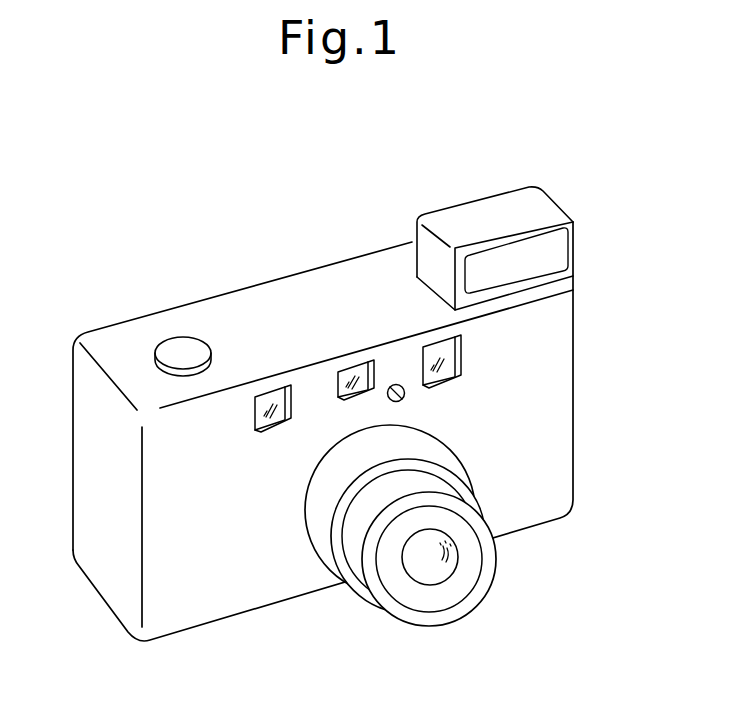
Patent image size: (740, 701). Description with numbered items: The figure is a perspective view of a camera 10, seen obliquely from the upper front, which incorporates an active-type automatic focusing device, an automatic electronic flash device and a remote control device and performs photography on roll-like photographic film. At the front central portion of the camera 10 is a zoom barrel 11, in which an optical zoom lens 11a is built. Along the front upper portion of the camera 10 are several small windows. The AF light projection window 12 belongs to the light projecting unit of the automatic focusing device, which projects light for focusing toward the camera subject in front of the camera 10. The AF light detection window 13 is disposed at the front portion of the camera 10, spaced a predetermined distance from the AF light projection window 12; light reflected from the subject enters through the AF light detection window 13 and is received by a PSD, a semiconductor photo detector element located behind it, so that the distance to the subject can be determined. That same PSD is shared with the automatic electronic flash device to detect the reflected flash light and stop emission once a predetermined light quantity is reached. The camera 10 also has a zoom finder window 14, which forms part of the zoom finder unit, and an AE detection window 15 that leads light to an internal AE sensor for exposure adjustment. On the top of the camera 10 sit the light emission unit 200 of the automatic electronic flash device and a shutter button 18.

The camera 10 is at (113, 213).
The light emission unit 200 is at (480, 210).
The shutter button 18 is at (177, 345).
The AF light detection window 13 is at (277, 388).
The zoom finder window 14 is at (350, 370).
The AE detection window 15 is at (394, 385).
The AF light projection window 12 is at (432, 333).
The zoom barrel 11 is at (320, 527).
The optical zoom lens 11a is at (420, 562).